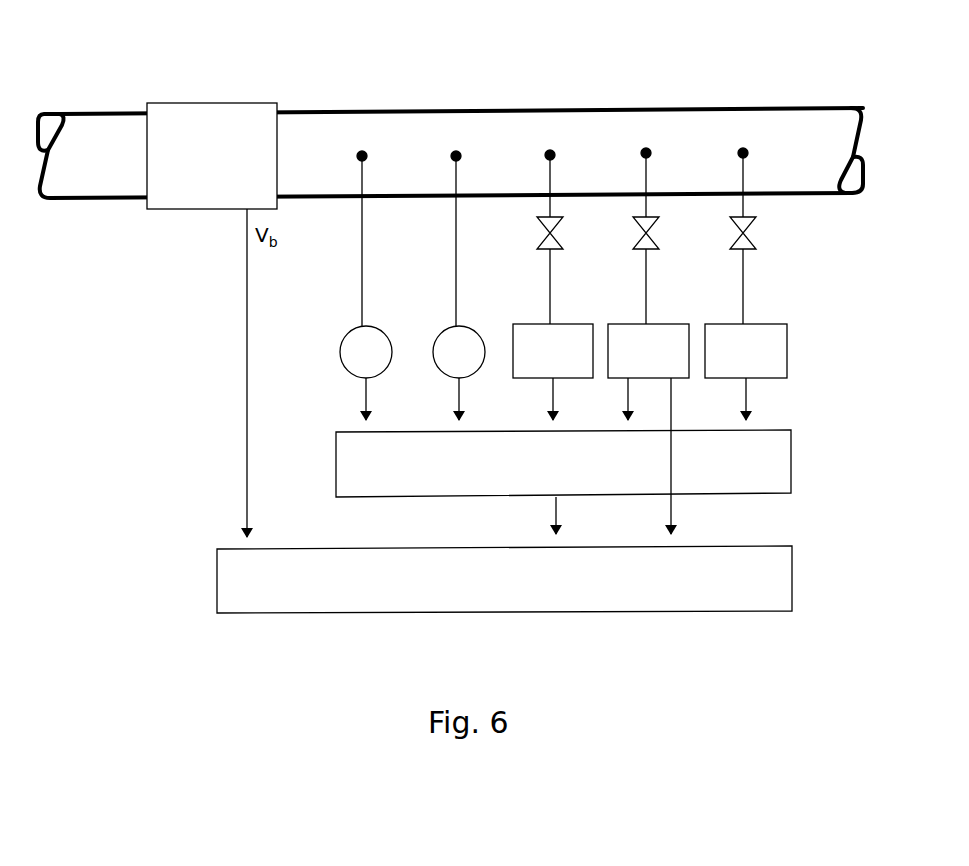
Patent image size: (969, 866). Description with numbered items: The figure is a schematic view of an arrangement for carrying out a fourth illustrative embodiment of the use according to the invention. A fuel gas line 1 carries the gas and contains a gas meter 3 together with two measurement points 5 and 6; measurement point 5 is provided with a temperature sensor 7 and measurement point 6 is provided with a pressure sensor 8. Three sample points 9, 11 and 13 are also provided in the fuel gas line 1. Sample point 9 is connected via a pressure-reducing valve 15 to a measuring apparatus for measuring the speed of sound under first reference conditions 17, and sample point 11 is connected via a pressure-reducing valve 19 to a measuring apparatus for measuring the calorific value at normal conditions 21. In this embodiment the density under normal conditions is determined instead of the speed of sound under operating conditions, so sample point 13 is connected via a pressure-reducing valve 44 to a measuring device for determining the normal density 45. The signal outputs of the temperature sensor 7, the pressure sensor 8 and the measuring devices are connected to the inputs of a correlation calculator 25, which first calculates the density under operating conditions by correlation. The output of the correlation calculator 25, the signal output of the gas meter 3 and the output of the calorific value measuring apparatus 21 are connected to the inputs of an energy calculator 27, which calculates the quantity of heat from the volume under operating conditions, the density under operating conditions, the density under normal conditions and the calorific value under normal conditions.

The fuel gas line 1 is at (90, 158).
The gas meter 3 is at (220, 113).
The measurement point 5 is at (365, 155).
The measurement point 6 is at (459, 155).
The temperature sensor 7 is at (387, 337).
The pressure sensor 8 is at (481, 337).
The sample point 9 is at (553, 154).
The sample point 11 is at (649, 152).
The sample point 13 is at (746, 152).
The pressure-reducing valve 15 is at (552, 236).
The measuring apparatus for measuring the speed of sound under first reference condi 17 is at (560, 324).
The pressure-reducing valve 19 is at (648, 236).
The measuring apparatus for measuring the calorific value at normal conditions 21 is at (660, 324).
The correlation calculator 25 is at (793, 458).
The energy calculator 27 is at (794, 578).
The pressure-reducing valve 44 is at (745, 236).
The measuring device for determining the normal density 45 is at (757, 324).